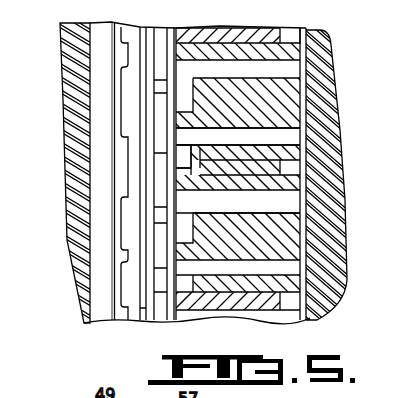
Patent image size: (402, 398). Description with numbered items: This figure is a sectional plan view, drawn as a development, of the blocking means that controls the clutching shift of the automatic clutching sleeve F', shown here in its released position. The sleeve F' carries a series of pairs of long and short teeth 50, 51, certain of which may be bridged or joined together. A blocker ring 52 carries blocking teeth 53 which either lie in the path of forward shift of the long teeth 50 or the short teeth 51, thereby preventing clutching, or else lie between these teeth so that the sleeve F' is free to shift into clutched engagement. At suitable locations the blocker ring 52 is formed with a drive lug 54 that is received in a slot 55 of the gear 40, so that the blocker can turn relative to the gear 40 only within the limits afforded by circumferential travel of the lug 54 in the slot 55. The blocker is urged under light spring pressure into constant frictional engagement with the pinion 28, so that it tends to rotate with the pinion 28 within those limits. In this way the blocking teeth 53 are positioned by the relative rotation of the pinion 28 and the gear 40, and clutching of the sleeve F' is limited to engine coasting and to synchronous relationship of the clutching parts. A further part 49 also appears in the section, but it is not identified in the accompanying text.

The pinion 28 is at (68, 86).
The gear 40 is at (322, 41).
The clamping bolt 49 is at (133, 248).
The long teeth 50 is at (198, 130).
The short teeth 51 is at (198, 80).
The blocker ring 52 is at (162, 33).
The blocking teeth 53 is at (165, 80).
The drive lug 54 is at (217, 171).
The slot 55 is at (178, 153).
The clutching sleeve F' is at (329, 174).